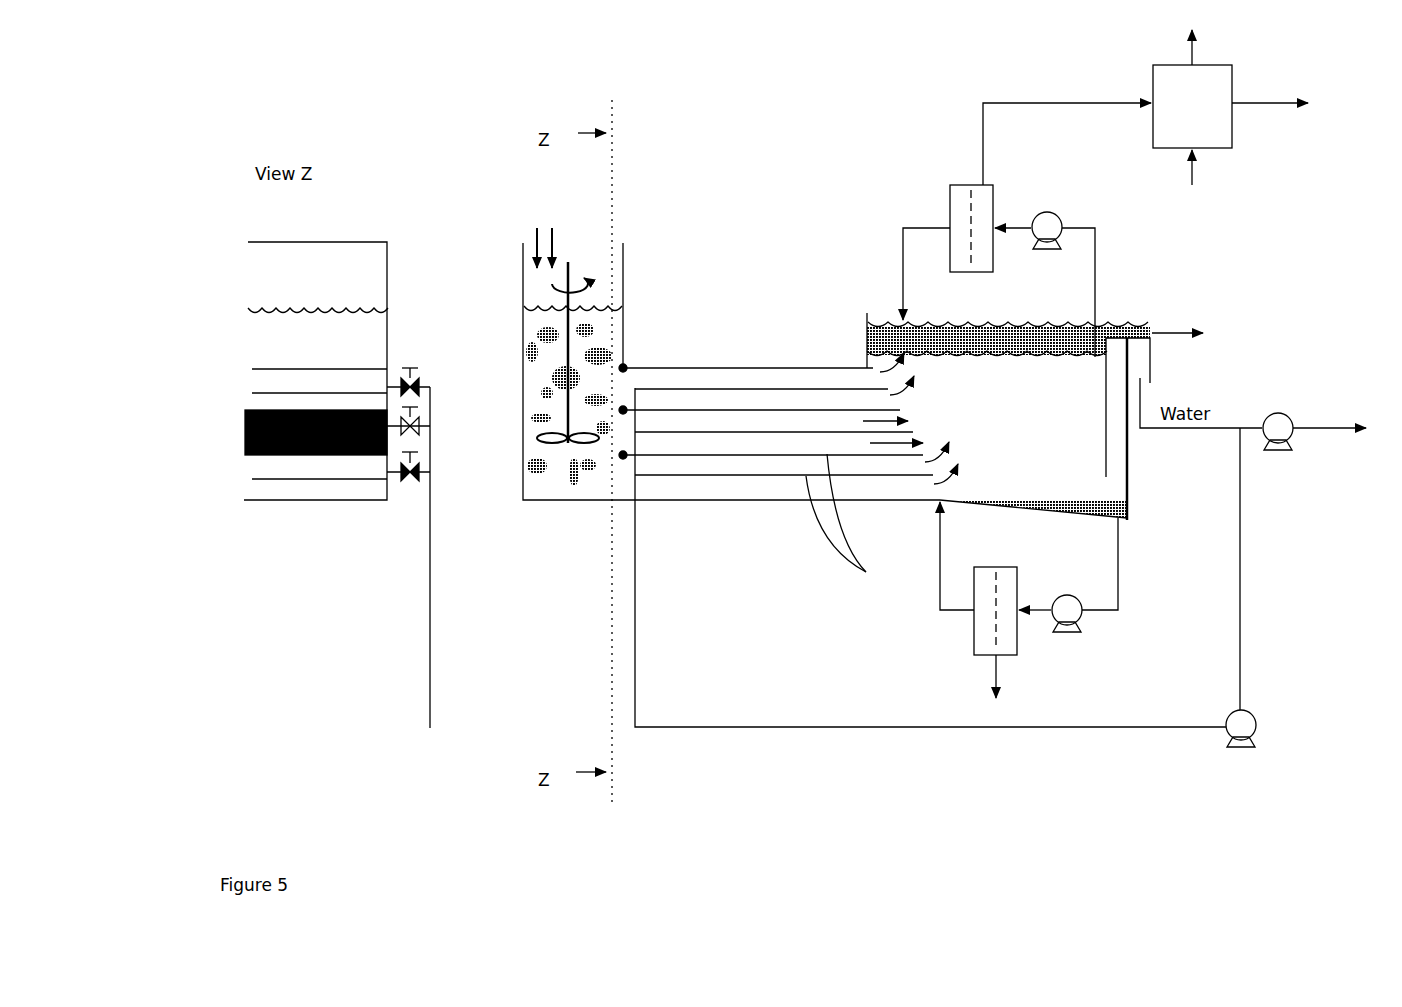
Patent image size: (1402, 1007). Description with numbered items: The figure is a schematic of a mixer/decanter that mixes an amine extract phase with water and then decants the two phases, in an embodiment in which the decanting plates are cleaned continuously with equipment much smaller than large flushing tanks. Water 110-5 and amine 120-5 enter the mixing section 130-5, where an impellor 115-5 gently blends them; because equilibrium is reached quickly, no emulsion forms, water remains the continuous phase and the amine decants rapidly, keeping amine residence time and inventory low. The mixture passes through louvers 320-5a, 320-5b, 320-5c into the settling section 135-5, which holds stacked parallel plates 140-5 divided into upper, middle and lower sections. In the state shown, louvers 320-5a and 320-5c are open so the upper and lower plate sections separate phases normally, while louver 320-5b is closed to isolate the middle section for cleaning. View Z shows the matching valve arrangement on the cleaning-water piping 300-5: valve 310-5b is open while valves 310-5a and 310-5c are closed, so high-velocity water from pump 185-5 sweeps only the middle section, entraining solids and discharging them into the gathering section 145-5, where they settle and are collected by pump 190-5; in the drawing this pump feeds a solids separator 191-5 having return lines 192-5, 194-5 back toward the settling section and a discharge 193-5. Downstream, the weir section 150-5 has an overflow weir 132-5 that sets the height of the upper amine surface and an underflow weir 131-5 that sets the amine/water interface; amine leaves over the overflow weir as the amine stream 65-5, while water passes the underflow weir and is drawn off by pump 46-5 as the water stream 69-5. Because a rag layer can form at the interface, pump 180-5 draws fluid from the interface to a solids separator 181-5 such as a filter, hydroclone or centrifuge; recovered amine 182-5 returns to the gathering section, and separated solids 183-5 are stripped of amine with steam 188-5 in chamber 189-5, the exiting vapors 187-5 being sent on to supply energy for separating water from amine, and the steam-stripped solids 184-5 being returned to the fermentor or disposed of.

The water 110-5 is at (510, 228).
The amine 120-5 is at (575, 228).
The impellor 115-5 is at (565, 343).
The mixing section 130-5 is at (731, 420).
The settling section 135-5 is at (932, 545).
The gathering section 145-5 is at (1008, 387).
The weir section 150-5 is at (1184, 429).
The parallel plates 140-5 is at (270, 393).
The recirculation piping 300-5 is at (634, 685).
The valve 310-5a is at (415, 383).
The valve 310-5b is at (415, 422).
The valve 310-5c is at (415, 468).
The louver 320-5a is at (590, 373).
The louver 320-5b is at (623, 412).
The louver 320-5c is at (586, 464).
The underflow weir 131-5 is at (1127, 352).
The overflow weir 132-5 is at (1122, 330).
The amine outlet 65-5 is at (1168, 333).
The water outlet 69-5 is at (1300, 425).
The water pump 46-5 is at (1277, 455).
The pump 180-5 is at (1045, 212).
The solids separator 181-5 is at (979, 274).
The amine 182-5 is at (900, 298).
The separated solids 183-5 is at (1070, 103).
The steam-stripped solids 184-5 is at (1250, 105).
The pump 185-5 is at (1240, 752).
The exiting vapors 187-5 is at (1197, 57).
The steam 188-5 is at (1198, 172).
The chamber 189-5 is at (1230, 150).
The pump 190-5 is at (1068, 635).
The separator 191-5 is at (1008, 565).
The return line 192-5 is at (955, 613).
The discharge line 193-5 is at (997, 672).
The return line to settling section 194-5 is at (1107, 517).